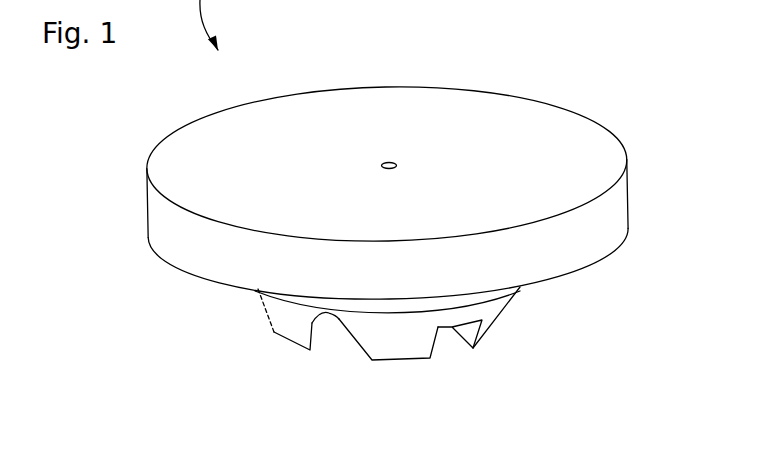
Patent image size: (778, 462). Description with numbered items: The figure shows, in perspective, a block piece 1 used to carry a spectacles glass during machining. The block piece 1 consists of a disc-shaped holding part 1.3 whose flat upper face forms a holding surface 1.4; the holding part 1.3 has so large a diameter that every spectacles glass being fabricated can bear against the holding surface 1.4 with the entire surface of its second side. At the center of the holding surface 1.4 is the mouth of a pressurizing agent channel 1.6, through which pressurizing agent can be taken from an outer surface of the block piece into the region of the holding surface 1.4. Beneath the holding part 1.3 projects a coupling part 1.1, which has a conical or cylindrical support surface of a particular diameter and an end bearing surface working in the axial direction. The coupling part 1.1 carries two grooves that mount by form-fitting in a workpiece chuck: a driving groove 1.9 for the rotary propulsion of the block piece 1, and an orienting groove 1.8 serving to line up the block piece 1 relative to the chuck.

The block piece 1 is at (588, 62).
The coupling part 1.1 is at (498, 320).
The holding part 1.3 is at (172, 235).
The holding surface 1.4 is at (255, 163).
The pressurizing agent channel 1.6 is at (390, 163).
The orienting groove 1.8 is at (451, 354).
The driving groove 1.9 is at (333, 361).